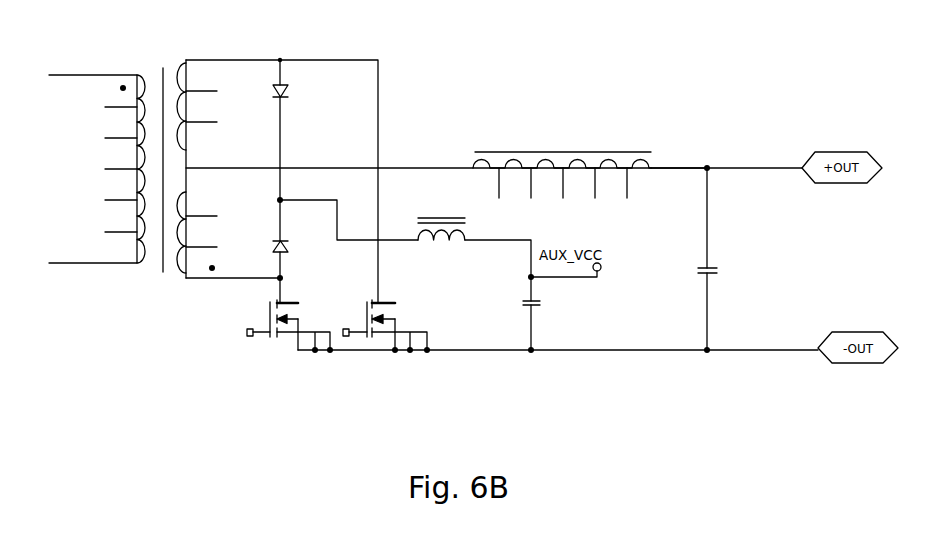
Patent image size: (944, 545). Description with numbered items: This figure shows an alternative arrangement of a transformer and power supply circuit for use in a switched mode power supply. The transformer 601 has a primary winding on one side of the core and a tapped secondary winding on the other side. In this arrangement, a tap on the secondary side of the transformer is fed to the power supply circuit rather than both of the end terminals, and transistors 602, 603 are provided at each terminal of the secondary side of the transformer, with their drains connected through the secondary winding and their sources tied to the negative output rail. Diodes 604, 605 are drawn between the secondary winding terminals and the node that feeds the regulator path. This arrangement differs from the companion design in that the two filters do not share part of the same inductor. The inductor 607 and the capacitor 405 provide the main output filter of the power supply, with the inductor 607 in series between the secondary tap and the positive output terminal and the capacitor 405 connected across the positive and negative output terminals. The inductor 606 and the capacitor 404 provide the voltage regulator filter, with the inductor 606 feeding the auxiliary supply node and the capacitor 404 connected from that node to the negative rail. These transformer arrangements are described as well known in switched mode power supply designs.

The transformer 601 is at (132, 67).
The synchronous rectifier MOSFET 602 is at (256, 313).
The synchronous rectifier MOSFET 603 is at (400, 301).
The diode 604 is at (289, 100).
The diode 605 is at (268, 243).
The inductor 606 is at (430, 213).
The inductor 607 is at (557, 142).
The capacitor 404 is at (545, 305).
The capacitor 405 is at (718, 263).